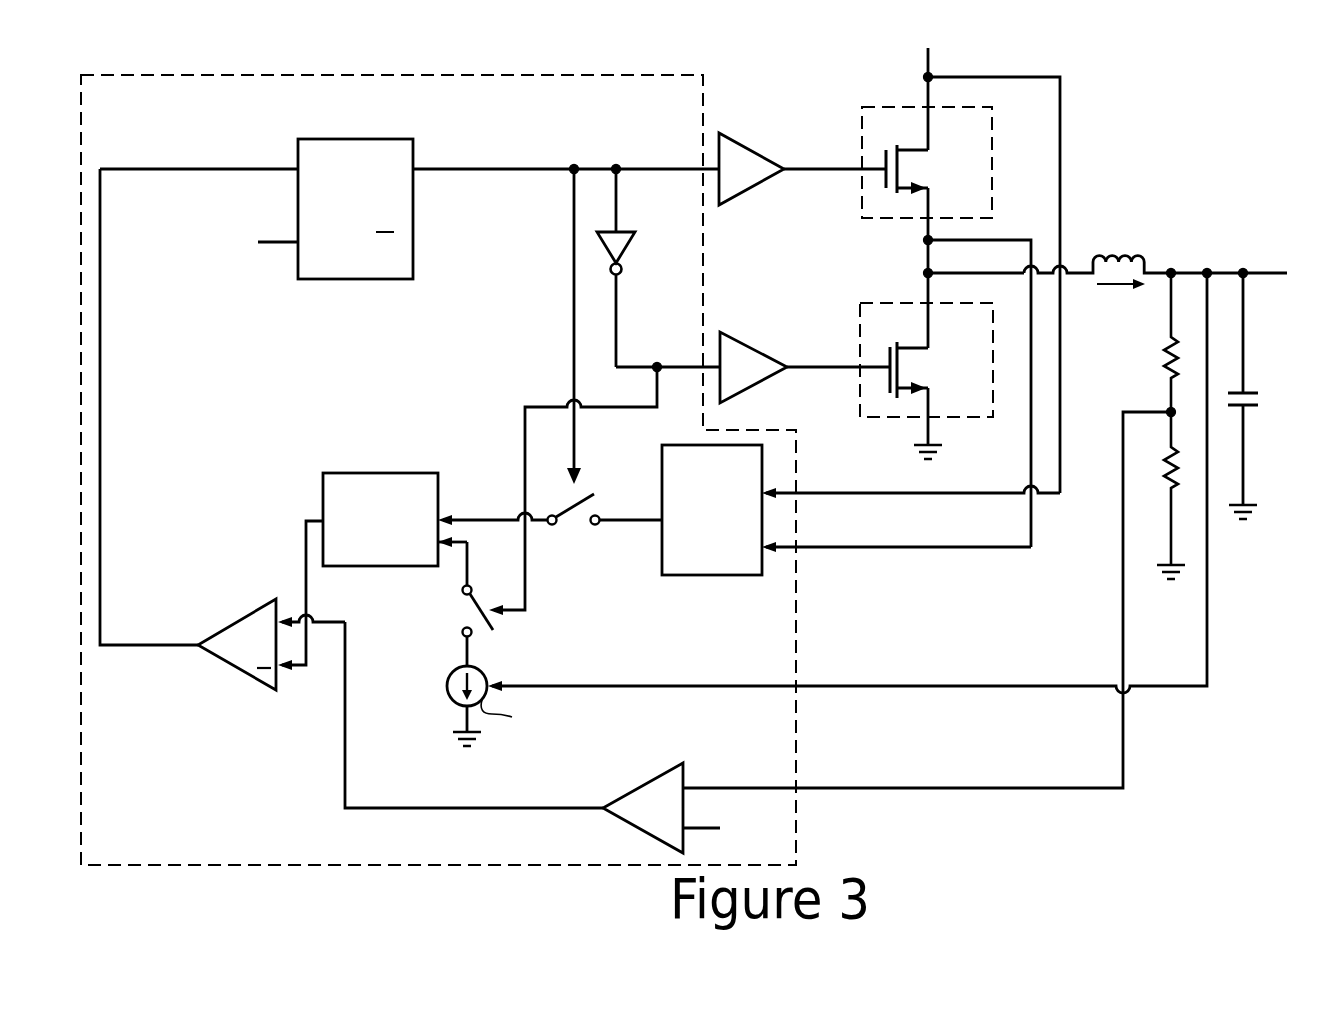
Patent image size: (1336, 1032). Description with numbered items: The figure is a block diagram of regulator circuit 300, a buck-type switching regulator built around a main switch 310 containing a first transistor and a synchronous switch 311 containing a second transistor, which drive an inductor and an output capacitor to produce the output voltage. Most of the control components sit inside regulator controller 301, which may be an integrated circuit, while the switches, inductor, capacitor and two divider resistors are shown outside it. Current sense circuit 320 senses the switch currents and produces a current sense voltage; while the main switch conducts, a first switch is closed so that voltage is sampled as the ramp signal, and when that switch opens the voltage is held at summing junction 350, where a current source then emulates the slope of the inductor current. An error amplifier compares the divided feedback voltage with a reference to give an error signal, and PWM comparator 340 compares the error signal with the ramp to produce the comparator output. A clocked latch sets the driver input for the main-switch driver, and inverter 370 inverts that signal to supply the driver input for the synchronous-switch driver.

The regulator circuit 300 is at (1113, 50).
The regulator controller 301 is at (147, 831).
The main switch 310 is at (985, 145).
The synchronous switch 311 is at (985, 335).
The current sense circuit 320 is at (730, 560).
The PWM comparator 340 is at (243, 620).
The summing junction 350 is at (399, 557).
The inverter 370 is at (627, 249).